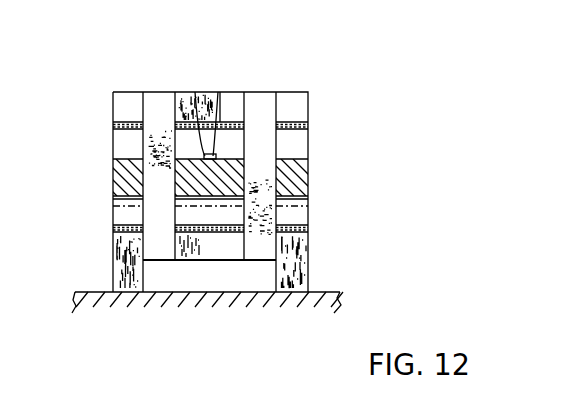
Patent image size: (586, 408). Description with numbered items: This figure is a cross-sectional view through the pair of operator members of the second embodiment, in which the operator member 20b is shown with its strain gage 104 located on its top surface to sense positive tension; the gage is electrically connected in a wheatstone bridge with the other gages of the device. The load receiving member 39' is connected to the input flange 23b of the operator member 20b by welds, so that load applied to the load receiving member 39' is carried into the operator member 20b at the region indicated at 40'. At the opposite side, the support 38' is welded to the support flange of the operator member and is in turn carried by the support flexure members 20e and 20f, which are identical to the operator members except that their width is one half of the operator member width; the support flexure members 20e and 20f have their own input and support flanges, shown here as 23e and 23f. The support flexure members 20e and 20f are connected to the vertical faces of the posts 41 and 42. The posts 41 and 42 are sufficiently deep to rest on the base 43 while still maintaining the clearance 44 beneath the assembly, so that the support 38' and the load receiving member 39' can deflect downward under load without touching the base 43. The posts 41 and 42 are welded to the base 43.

The support 38' is at (113, 171).
The operator member 20b is at (195, 92).
The contact via 40' is at (190, 74).
The strain gage 104 is at (218, 92).
The input flange 23b is at (228, 138).
The insulating layer 23e is at (123, 140).
The insulating layer 23f is at (297, 138).
The support flexure member 20e is at (122, 156).
The support flexure member 20f is at (296, 158).
The post 41 is at (118, 280).
The post 42 is at (300, 280).
The base 43 is at (330, 291).
The clearance 44 is at (240, 278).
The load receiving member 39' is at (209, 298).